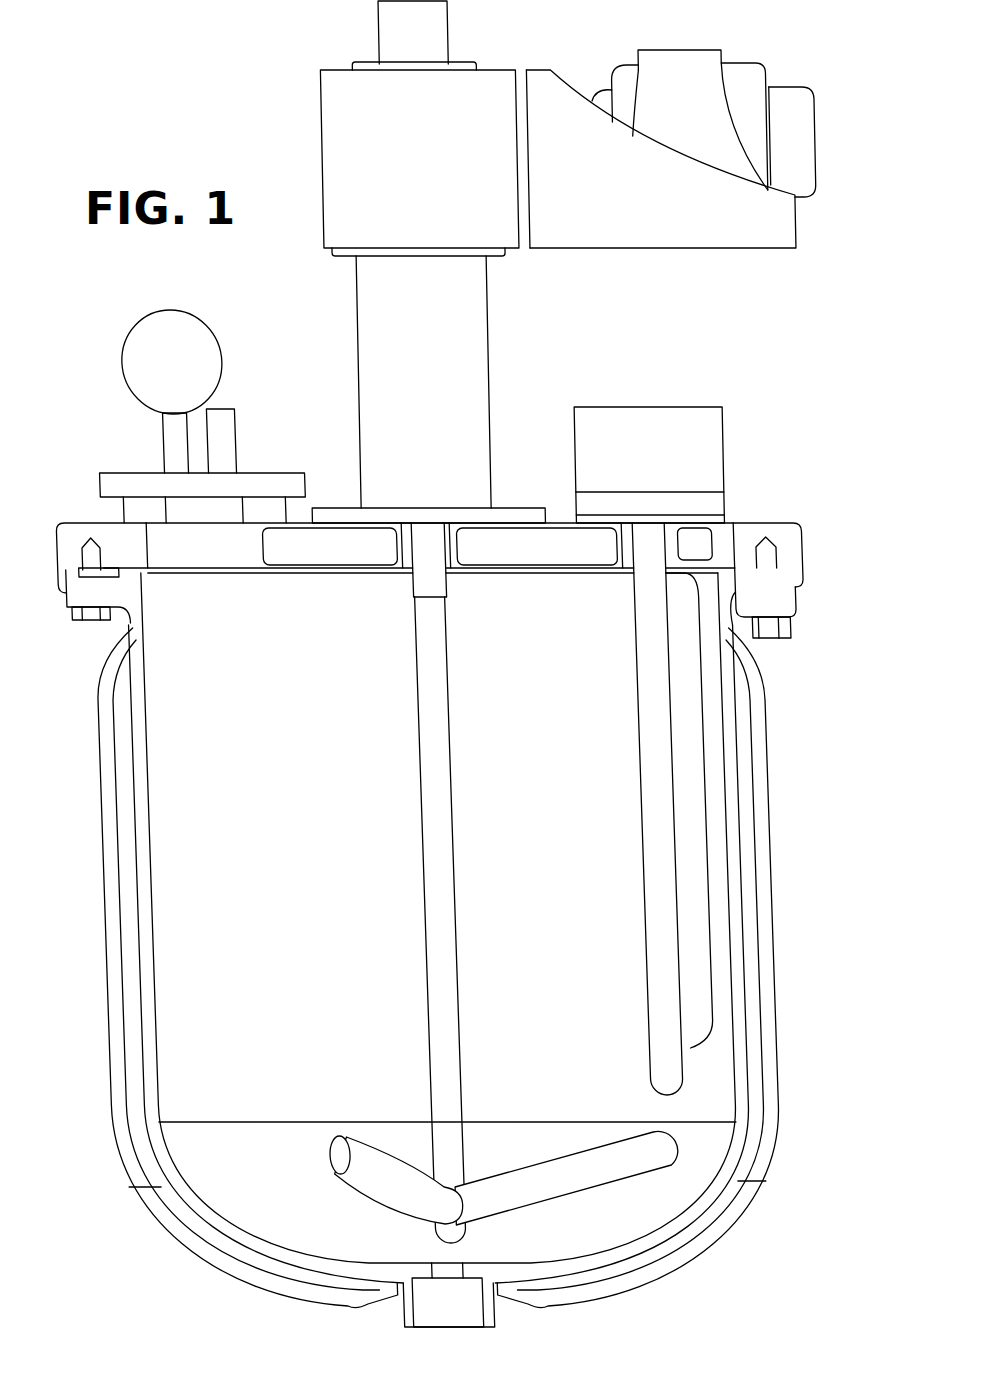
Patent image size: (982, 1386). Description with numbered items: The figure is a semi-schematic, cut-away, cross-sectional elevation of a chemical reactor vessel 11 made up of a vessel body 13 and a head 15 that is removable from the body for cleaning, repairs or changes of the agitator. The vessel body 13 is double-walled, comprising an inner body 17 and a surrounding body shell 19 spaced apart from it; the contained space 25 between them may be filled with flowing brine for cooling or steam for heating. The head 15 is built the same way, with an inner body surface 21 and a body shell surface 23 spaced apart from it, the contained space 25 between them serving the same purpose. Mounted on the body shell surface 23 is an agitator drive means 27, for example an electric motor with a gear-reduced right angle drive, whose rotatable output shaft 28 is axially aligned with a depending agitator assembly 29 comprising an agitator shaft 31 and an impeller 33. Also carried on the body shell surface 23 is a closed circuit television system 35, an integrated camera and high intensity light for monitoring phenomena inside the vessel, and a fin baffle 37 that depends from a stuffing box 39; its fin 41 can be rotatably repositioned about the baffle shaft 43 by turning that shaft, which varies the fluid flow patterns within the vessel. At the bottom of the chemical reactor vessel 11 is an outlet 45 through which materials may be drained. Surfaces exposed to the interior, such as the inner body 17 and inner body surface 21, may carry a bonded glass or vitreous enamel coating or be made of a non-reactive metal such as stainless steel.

The chemical reactor vessel 11 is at (497, 940).
The vessel body 13 is at (464, 940).
The head 15 is at (803, 556).
The inner body 17 is at (746, 984).
The body shell 19 is at (783, 1111).
The inner body surface 21 is at (216, 572).
The body shell surface 23 is at (743, 521).
The contained space 25 is at (318, 542).
The agitator drive means 27 is at (581, 249).
The rotatable output shaft 28 is at (411, 588).
The agitator assembly 29 is at (504, 926).
The agitator shaft 31 is at (428, 1068).
The impeller 33 is at (392, 1210).
The closed circuit television system 35 is at (136, 403).
The fin baffle 37 is at (690, 1047).
The stuffing box 39 is at (725, 433).
The fin 41 is at (712, 727).
The baffle shaft 43 is at (673, 683).
The outlet 45 is at (497, 1316).